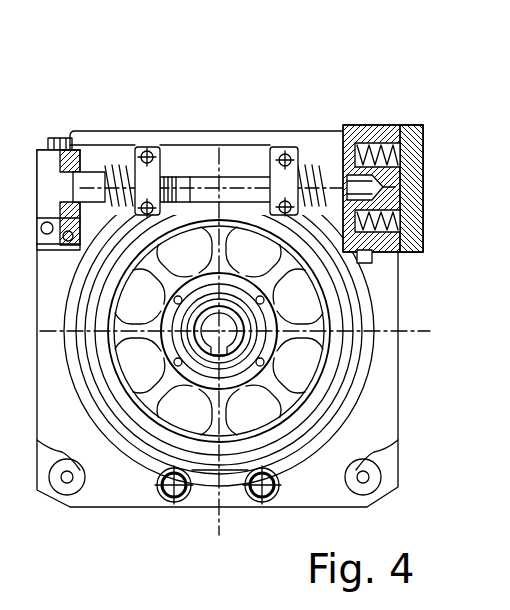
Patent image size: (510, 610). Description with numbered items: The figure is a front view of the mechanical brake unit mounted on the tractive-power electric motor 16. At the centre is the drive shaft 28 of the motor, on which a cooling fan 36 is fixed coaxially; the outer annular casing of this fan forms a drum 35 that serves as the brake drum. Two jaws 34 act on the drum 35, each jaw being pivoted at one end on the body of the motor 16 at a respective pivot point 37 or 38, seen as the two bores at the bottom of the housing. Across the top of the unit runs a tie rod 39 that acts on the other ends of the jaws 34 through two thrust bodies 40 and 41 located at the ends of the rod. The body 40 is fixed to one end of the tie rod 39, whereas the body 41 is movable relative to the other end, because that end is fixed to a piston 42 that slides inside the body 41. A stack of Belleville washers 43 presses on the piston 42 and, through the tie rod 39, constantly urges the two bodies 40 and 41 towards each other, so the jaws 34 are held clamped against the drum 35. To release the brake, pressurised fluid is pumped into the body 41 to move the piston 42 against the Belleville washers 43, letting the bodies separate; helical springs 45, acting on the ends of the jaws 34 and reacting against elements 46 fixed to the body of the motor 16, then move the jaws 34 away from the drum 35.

The electric motor 16 is at (385, 437).
The drive shaft 28 is at (265, 362).
The jaws 34 is at (350, 362).
The drum 35 is at (322, 322).
The cooling fan 36 is at (300, 282).
The pivot point 37 is at (172, 505).
The pivot point 38 is at (254, 507).
The tie rod 39 is at (242, 183).
The thrust body 40 is at (83, 148).
The thrust body 41 is at (365, 125).
The piston 42 is at (423, 188).
The Belleville washers 43 is at (400, 128).
The helical springs 45 is at (133, 150).
The elements 46 is at (183, 150).